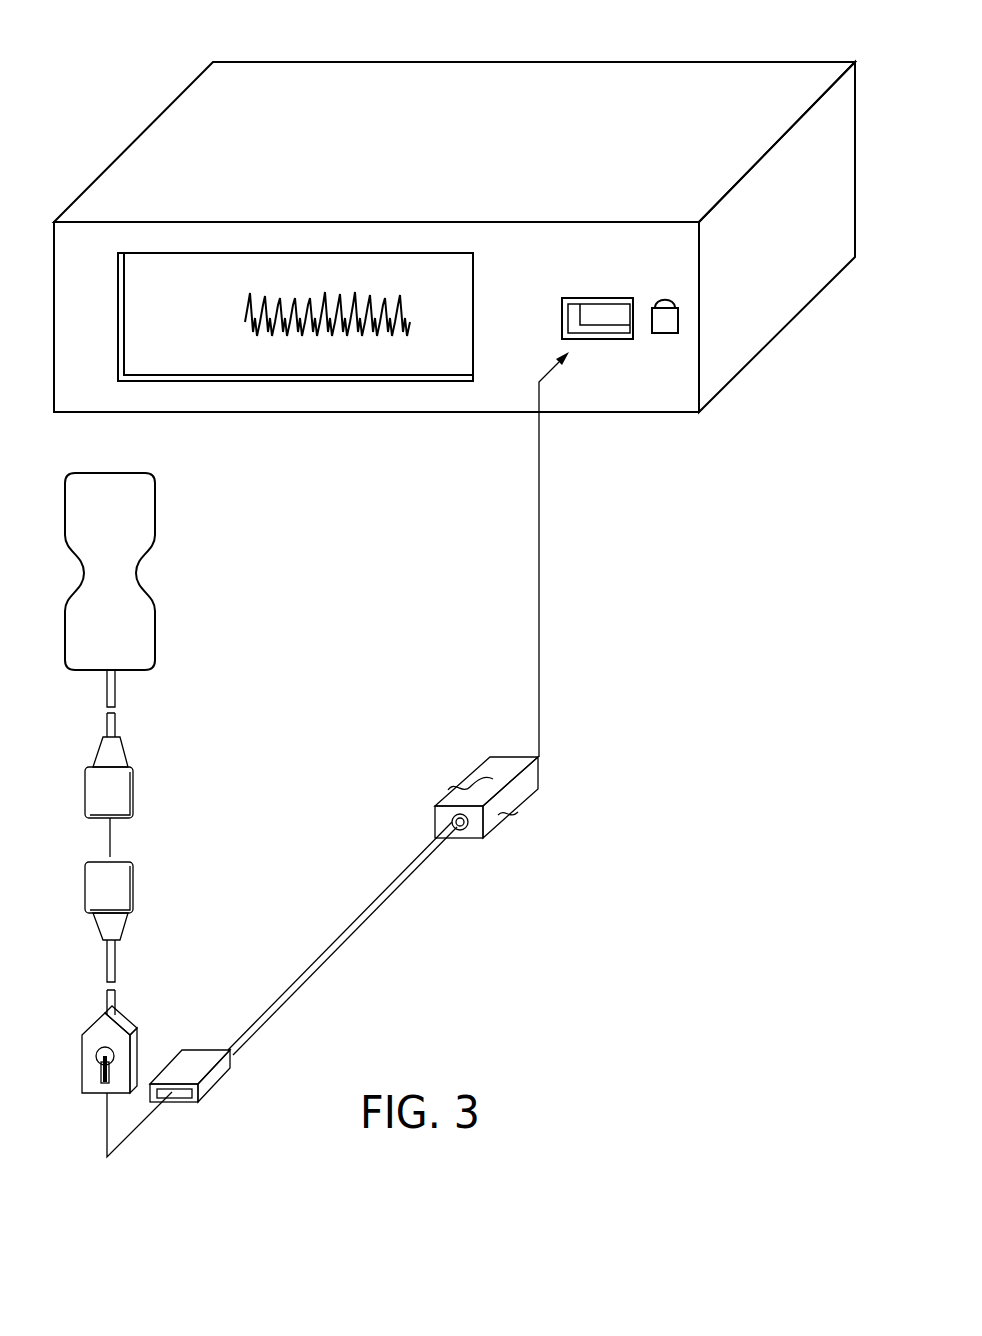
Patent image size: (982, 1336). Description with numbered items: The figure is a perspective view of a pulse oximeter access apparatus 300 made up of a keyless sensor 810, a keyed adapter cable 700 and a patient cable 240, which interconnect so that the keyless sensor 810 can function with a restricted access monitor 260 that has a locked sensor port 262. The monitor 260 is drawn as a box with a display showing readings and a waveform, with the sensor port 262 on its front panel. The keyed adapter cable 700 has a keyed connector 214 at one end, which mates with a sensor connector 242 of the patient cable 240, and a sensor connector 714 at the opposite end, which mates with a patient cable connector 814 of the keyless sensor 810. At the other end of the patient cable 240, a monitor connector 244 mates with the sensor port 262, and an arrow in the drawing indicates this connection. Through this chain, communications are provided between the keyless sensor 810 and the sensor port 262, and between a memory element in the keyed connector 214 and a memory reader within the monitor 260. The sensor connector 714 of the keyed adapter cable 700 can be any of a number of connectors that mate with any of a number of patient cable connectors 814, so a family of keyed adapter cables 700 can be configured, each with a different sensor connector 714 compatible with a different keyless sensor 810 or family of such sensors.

The restricted access monitor 260 is at (777, 62).
The locked sensor port 262 is at (600, 298).
The pulse oximeter access apparatus 300 is at (316, 503).
The keyless sensor 810 is at (97, 473).
The patient cable connector 814 is at (125, 778).
The keyed adapter cable 700 is at (132, 862).
The sensor connector 714 is at (128, 912).
The keyed connector 214 is at (125, 1018).
The patient cable 240 is at (346, 940).
The sensor connector 242 is at (213, 1073).
The monitor connector 244 is at (525, 793).